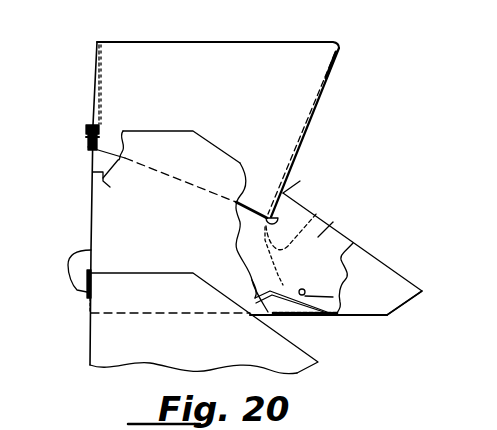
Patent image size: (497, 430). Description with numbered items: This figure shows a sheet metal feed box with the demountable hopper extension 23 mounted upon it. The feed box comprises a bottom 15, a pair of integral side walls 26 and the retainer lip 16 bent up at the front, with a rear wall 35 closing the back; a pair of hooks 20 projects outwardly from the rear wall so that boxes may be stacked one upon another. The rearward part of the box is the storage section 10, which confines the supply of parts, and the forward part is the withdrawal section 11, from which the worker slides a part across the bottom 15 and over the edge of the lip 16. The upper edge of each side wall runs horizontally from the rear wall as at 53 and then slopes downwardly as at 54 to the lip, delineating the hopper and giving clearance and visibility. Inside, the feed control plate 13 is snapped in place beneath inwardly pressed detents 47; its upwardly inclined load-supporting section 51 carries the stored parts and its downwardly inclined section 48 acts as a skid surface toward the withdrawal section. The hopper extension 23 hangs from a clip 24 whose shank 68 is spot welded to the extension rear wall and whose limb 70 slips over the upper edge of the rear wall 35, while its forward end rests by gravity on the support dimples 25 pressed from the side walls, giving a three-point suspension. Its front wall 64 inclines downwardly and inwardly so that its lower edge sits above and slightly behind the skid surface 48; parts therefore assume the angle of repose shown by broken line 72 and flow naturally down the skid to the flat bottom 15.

The storage section 10 is at (214, 160).
The parts withdrawal section 11 is at (381, 258).
The feed control plate 13 is at (268, 278).
The bottom 15 is at (312, 316).
The retainer lip 16 is at (407, 303).
The hooks 20 is at (68, 272).
The demountable hopper extension 23 is at (316, 65).
The clip 24 is at (84, 135).
The support dimples 25 is at (290, 199).
The side walls 26 is at (334, 224).
The rear wall 35 is at (110, 187).
The detents 47 is at (304, 289).
The downwardly inclined section 48 is at (345, 293).
The load-supporting section 51 is at (255, 282).
The horizontal upper edge 53 is at (168, 131).
The sloping edge 54 is at (317, 213).
The front wall 64 is at (318, 107).
The shank 68 is at (96, 115).
The limb 70 is at (86, 145).
The angle of repose 72 is at (289, 231).